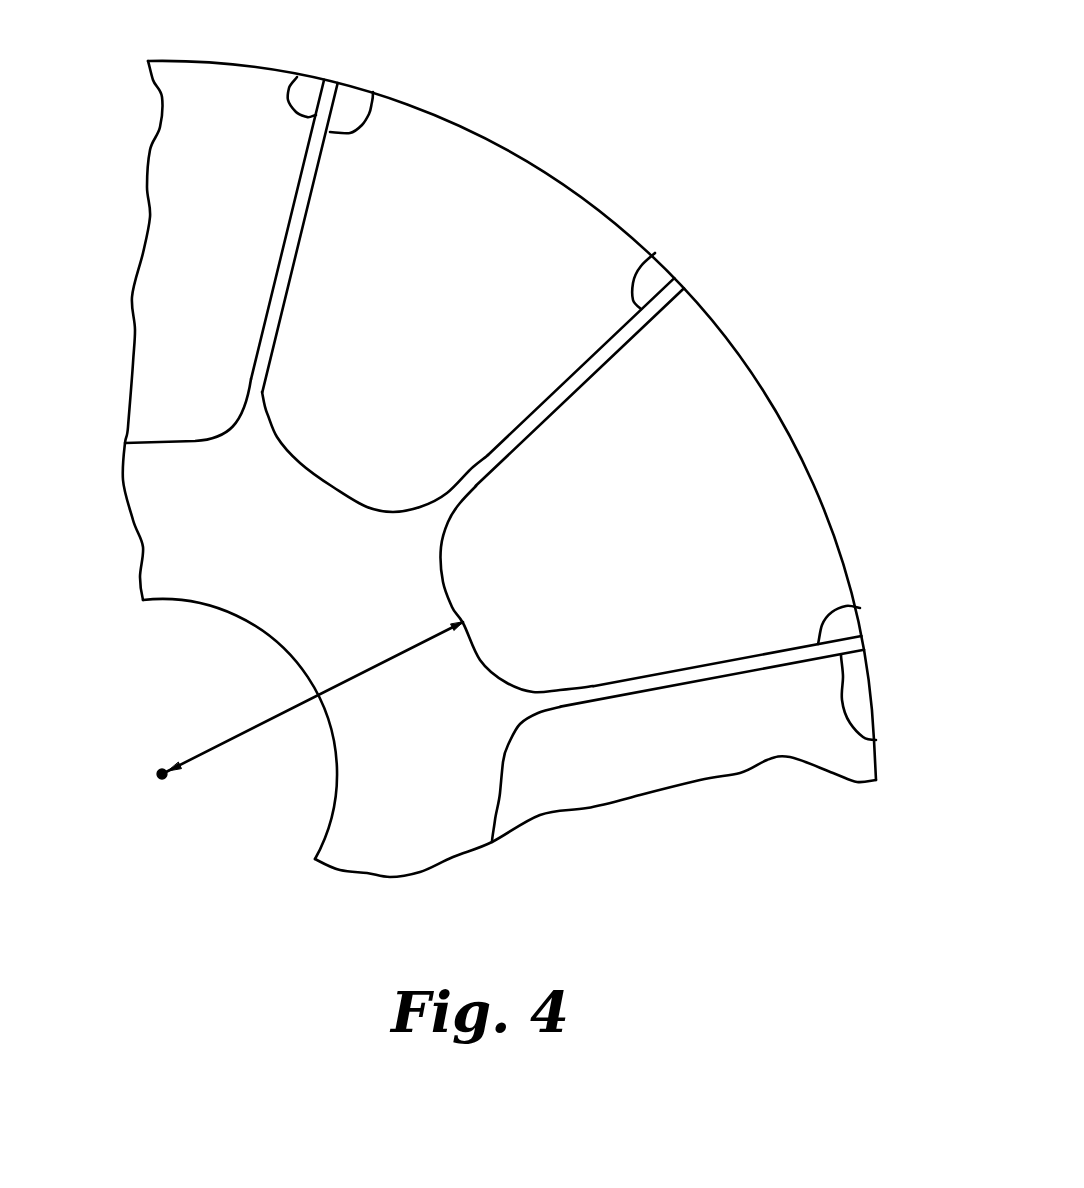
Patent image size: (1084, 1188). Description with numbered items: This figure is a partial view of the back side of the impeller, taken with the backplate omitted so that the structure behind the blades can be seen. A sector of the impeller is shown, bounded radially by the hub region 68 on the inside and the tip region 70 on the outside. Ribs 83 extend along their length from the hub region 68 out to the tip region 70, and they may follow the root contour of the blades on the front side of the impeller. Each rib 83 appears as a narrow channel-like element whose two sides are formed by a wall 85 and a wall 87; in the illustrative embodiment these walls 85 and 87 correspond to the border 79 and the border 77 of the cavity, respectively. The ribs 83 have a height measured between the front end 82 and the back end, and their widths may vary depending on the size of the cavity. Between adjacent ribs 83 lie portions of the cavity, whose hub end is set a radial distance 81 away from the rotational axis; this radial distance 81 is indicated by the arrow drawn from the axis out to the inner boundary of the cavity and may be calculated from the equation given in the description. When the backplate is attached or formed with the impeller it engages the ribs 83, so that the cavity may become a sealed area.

The tip region 70 is at (802, 331).
The hub region 68 is at (167, 683).
The radial distance 81 is at (287, 711).
The front end 82 is at (470, 195).
The border 77 is at (297, 77).
The border 79 is at (373, 92).
The ribs 83 is at (284, 303).
The wall 85 is at (300, 246).
The wall 87 is at (293, 207).